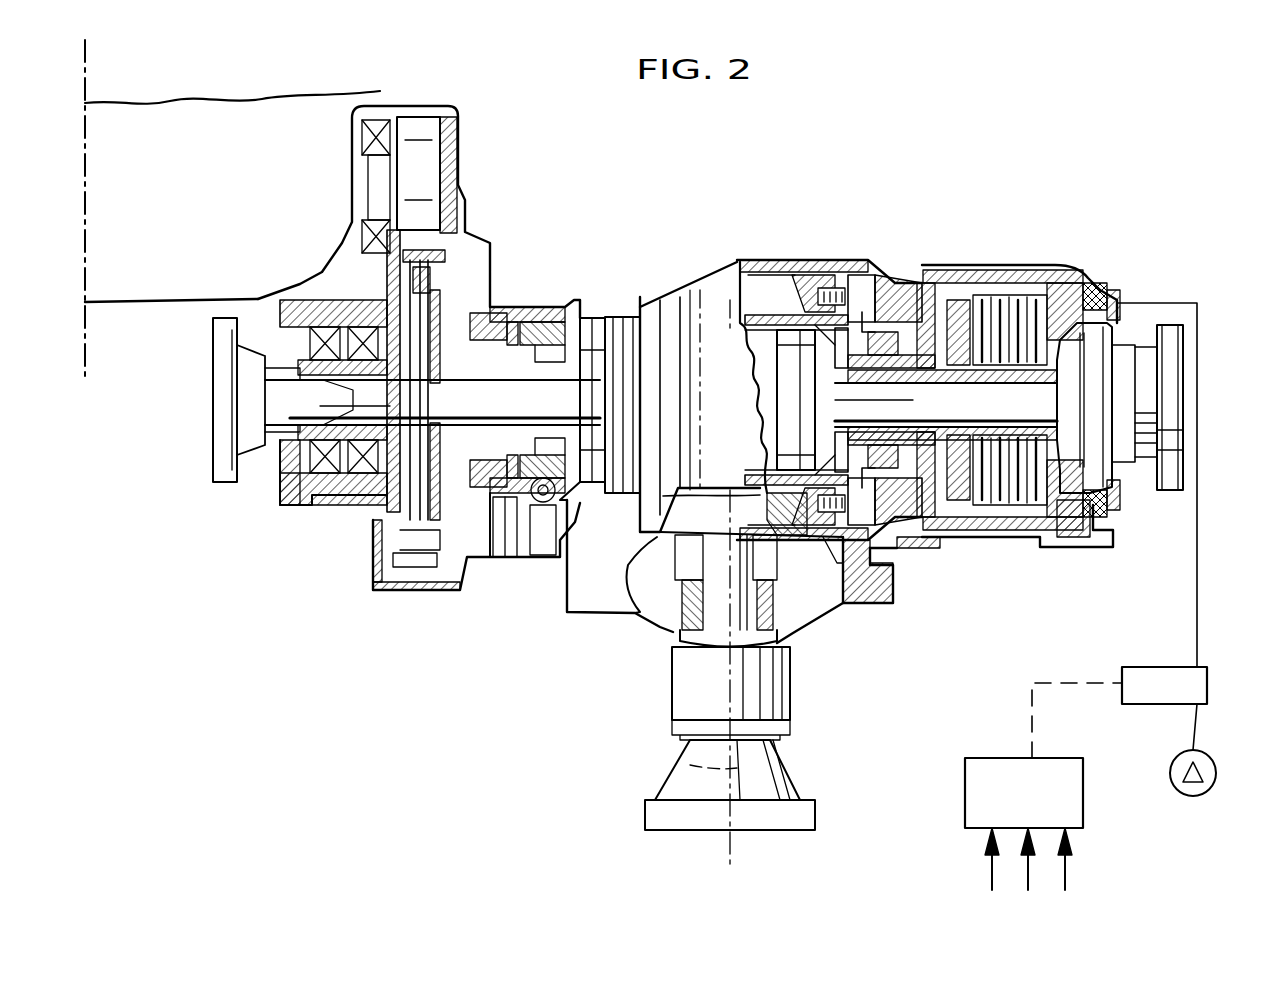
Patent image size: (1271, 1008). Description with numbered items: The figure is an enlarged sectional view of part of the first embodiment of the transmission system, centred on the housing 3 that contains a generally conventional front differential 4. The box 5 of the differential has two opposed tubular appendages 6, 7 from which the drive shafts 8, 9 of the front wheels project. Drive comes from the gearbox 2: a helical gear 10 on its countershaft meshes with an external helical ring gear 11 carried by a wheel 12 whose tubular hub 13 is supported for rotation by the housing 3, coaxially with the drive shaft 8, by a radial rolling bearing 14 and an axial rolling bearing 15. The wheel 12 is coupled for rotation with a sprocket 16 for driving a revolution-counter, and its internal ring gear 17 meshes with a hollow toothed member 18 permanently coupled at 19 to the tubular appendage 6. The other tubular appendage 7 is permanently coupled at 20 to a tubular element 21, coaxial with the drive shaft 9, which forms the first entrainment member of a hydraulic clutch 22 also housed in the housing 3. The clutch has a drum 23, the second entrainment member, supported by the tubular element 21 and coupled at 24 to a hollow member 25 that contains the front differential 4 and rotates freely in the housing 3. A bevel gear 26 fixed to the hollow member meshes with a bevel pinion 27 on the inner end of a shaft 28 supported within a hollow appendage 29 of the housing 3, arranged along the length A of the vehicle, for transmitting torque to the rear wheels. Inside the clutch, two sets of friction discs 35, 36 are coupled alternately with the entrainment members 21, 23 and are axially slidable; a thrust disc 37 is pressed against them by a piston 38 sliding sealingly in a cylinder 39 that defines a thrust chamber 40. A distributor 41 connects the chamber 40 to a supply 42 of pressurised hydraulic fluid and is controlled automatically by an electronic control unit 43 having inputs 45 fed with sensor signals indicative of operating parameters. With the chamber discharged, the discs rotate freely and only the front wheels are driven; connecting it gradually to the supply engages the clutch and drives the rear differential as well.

The gearbox 2 is at (122, 300).
The housing 3 is at (490, 300).
The front differential 4 is at (733, 305).
The box 5 is at (718, 343).
The tubular appendage 6 is at (586, 346).
The tubular appendage 7 is at (820, 447).
The drive shaft 8 is at (497, 545).
The drive shaft 9 is at (1123, 432).
The helical gear 10 is at (428, 140).
The external helical ring gear 11 is at (430, 568).
The wheel 12 is at (368, 522).
The tubular hub 13 is at (305, 388).
The radial rolling bearing 14 is at (357, 503).
The axial rolling bearing 15 is at (292, 465).
The sprocket 16 is at (522, 550).
The internal ring gear 17 is at (412, 545).
The hollow toothed member 18 is at (470, 330).
The coupling 19 is at (546, 345).
The coupling 20 is at (900, 512).
The tubular element 21 is at (967, 527).
The hydraulic clutch 22 is at (1020, 200).
The drum 23 is at (970, 290).
The coupling 24 is at (887, 282).
The hollow member 25 is at (765, 262).
The bevel gear 26 is at (822, 276).
The bevel pinion 27 is at (718, 610).
The shaft 28 is at (685, 633).
The hollow appendage 29 is at (793, 676).
The friction discs 35 is at (1000, 290).
The friction discs 36 is at (1004, 372).
The thrust disc 37 is at (1048, 280).
The piston 38 is at (1080, 275).
The cylinder 39 is at (1080, 510).
The thrust chamber 40 is at (1105, 290).
The distributor 41 is at (1140, 675).
The supply 42 is at (1190, 796).
The electronic control unit 43 is at (990, 770).
The inputs 45 is at (992, 877).
The length of the vehicle A is at (685, 775).